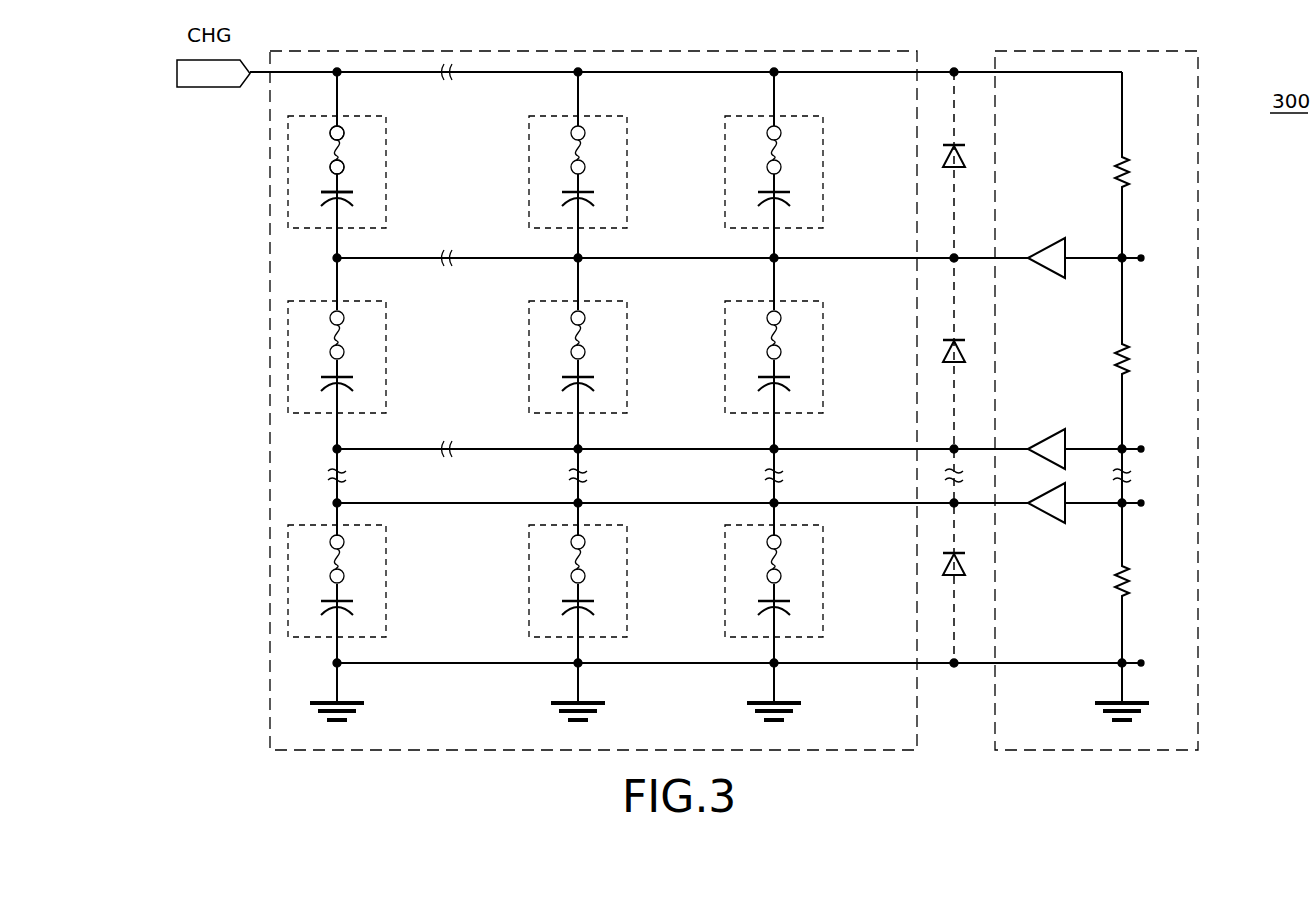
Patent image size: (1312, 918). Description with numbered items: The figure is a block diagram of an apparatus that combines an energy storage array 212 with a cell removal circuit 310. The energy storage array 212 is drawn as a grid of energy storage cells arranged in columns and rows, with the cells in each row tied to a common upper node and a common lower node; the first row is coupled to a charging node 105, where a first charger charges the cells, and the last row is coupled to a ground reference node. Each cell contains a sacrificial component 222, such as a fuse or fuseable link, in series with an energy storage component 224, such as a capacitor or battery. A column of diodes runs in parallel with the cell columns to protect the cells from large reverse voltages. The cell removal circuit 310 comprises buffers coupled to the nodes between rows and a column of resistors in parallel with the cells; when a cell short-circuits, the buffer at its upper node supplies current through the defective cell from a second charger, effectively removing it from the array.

The charging node 105 is at (187, 87).
The energy storage array 212 is at (270, 407).
The sacrificial component 222 is at (333, 146).
The energy storage component 224 is at (352, 203).
The cell removal circuit 310 is at (1188, 50).